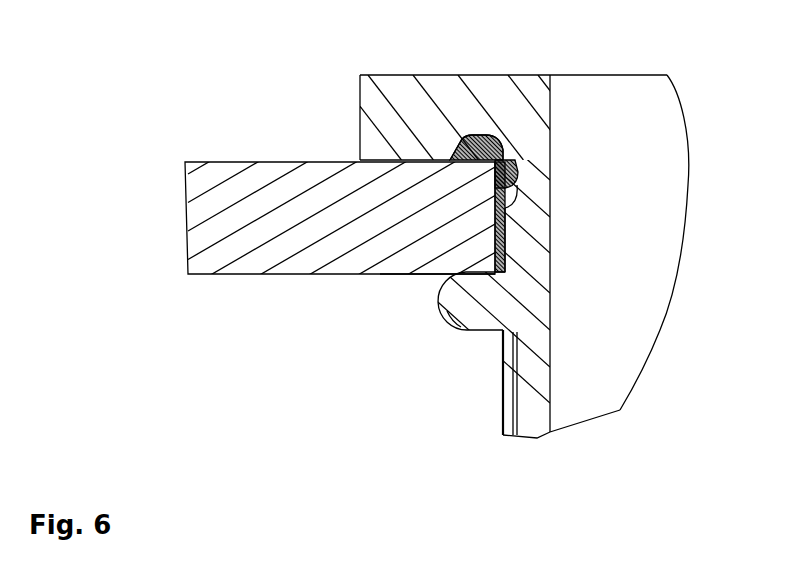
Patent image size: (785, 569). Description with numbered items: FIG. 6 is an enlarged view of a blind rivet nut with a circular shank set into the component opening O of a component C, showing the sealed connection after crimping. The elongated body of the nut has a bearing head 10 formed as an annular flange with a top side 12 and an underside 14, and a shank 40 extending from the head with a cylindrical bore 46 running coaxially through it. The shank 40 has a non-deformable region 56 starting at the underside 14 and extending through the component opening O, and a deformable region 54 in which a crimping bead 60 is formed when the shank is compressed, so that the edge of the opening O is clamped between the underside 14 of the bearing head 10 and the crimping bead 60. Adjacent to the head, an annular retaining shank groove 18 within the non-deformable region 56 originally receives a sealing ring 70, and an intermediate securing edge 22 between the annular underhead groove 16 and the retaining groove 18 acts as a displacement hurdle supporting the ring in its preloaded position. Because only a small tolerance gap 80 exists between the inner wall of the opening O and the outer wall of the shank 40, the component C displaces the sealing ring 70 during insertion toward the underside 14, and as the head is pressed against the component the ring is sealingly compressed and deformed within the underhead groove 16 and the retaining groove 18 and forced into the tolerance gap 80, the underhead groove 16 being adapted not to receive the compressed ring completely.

The bearing head 10 is at (460, 224).
The top side 12 is at (458, 75).
The underside 14 is at (360, 108).
The annular underhead groove 16 is at (487, 133).
The annular retaining shank groove 18 is at (518, 184).
The intermediate securing edge 22 is at (512, 168).
The shank 40 is at (520, 407).
The cylindrical bore 46 is at (649, 102).
The deformable region 54 is at (527, 360).
The non-deformable region 56 is at (520, 232).
The crimping bead 60 is at (445, 320).
The sealing ring 70 is at (503, 145).
The tolerance gap 80 is at (527, 268).
The component C is at (197, 212).
The component opening O is at (407, 273).